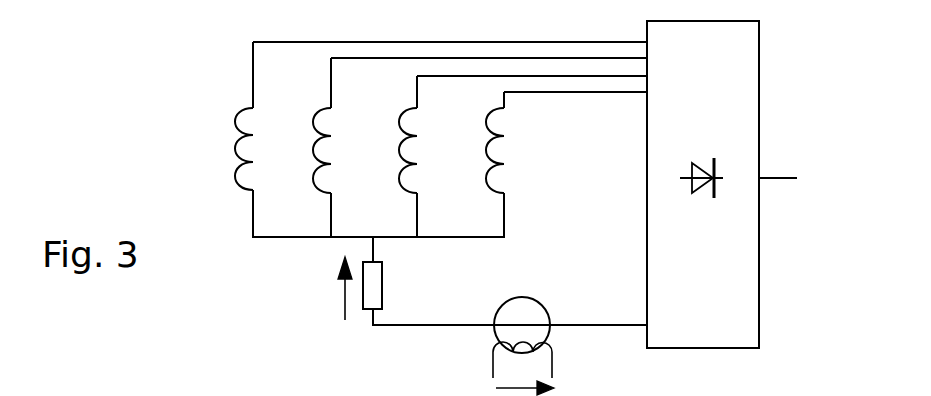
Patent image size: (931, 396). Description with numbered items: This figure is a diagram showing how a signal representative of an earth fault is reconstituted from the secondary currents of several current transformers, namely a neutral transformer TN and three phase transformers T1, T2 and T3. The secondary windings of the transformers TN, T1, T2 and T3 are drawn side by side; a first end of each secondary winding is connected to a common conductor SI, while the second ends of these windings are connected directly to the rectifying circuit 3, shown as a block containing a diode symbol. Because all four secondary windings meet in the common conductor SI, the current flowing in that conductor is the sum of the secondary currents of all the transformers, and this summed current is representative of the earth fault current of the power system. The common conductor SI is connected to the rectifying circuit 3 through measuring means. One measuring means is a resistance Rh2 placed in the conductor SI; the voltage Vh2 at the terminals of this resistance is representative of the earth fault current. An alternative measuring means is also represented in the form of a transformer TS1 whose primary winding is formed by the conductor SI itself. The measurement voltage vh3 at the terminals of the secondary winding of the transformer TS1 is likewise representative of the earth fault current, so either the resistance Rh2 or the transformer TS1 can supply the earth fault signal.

The rectifying circuit 3 is at (760, 63).
The current transformer TN is at (232, 153).
The current transformer T1 is at (313, 165).
The current transformer T2 is at (399, 165).
The current transformer T3 is at (490, 165).
The common conductor SI is at (373, 253).
The resistance Rh2 is at (382, 282).
The voltage Vh2 is at (312, 288).
The transformer TS1 is at (548, 308).
The measurement voltage vh3 is at (549, 378).